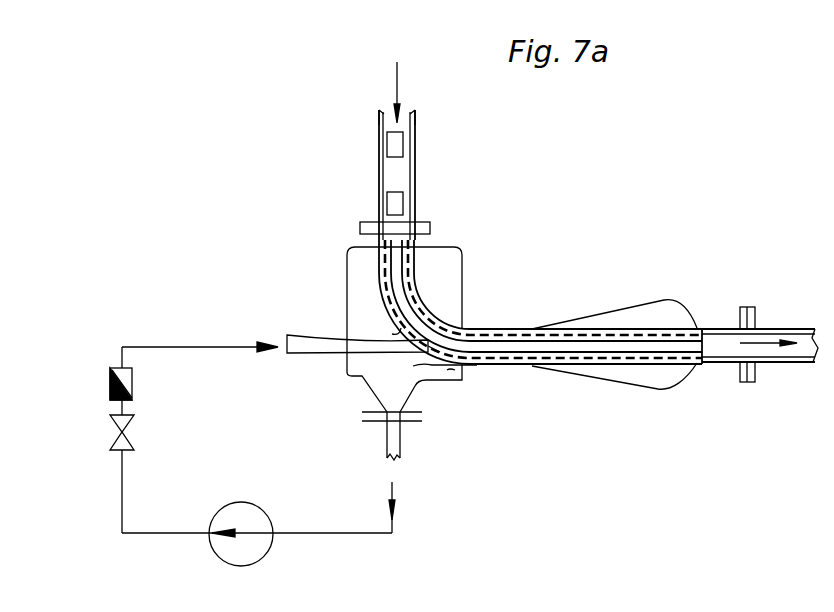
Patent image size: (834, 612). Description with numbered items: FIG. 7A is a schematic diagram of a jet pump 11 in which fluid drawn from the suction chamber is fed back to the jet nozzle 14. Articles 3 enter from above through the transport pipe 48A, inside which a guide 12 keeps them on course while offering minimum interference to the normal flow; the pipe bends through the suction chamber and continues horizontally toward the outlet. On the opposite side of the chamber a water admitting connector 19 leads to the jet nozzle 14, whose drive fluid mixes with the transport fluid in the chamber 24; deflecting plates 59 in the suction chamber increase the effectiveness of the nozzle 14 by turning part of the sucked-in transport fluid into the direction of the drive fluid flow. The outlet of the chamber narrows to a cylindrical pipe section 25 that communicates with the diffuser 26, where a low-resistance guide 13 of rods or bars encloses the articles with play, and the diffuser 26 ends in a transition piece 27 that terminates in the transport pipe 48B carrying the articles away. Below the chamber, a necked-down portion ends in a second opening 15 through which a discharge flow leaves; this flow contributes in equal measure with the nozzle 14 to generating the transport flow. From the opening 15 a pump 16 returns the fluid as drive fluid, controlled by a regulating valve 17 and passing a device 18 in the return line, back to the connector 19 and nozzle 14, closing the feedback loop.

The articles 3 is at (395, 150).
The transport pipe 48A is at (413, 140).
The guide 12 is at (413, 197).
The deflecting plates 59 is at (438, 287).
The jet pump 11 is at (511, 328).
The guide 13 is at (606, 330).
The transport pipe 48B is at (785, 330).
The water admitting connector 19 is at (308, 338).
The jet nozzle 14 is at (395, 330).
The pressure regulator 18 is at (131, 378).
The regulating valve 17 is at (133, 441).
The pump 16 is at (236, 512).
The second opening 15 is at (380, 390).
The chamber 24 is at (480, 367).
The cylindrical pipe section 25 is at (518, 365).
The diffuser 26 is at (623, 378).
The transition piece 27 is at (673, 366).